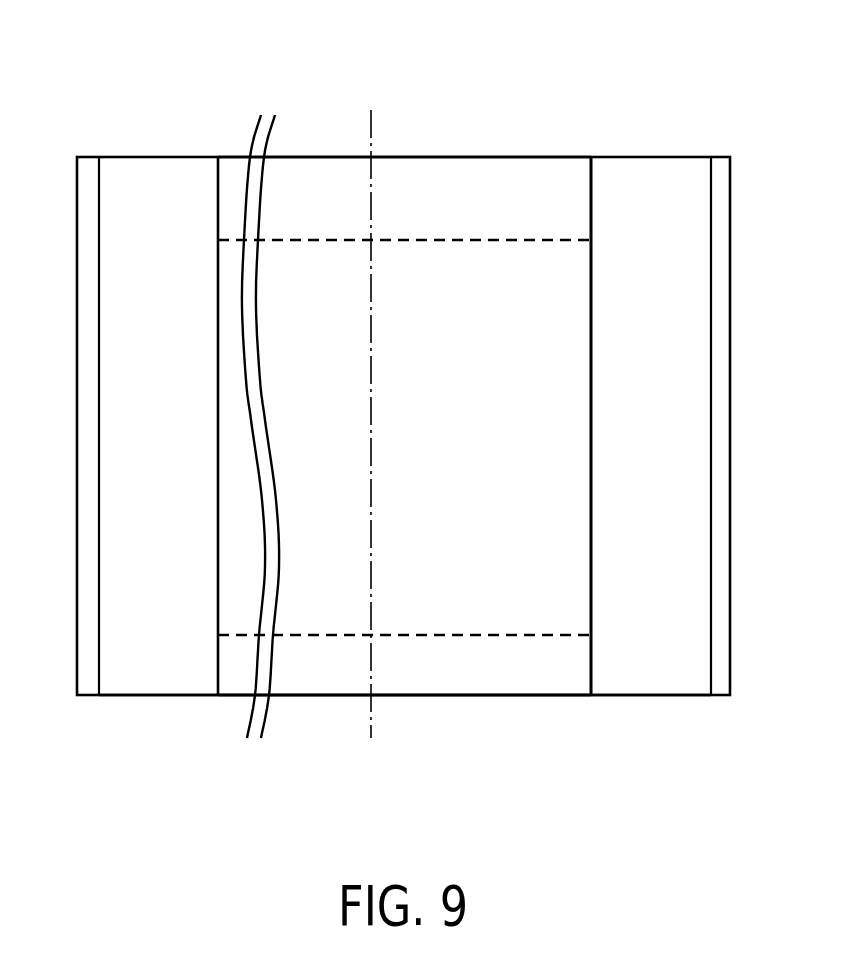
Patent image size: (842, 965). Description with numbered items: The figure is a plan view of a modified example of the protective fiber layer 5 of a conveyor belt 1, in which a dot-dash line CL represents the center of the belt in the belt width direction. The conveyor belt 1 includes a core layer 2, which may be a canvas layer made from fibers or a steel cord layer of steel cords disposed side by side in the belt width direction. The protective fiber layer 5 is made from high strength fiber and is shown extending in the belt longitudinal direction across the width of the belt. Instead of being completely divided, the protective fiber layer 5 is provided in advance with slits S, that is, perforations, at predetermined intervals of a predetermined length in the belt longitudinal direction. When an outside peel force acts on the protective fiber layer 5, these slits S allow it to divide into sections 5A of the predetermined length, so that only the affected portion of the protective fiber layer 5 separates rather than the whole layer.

The conveyor belt 1 is at (662, 120).
The core layer 2 is at (662, 707).
The protective fiber layer 5 is at (460, 138).
The sections 5A is at (523, 170).
The slits S is at (533, 242).
The dot-dash line CL is at (372, 399).